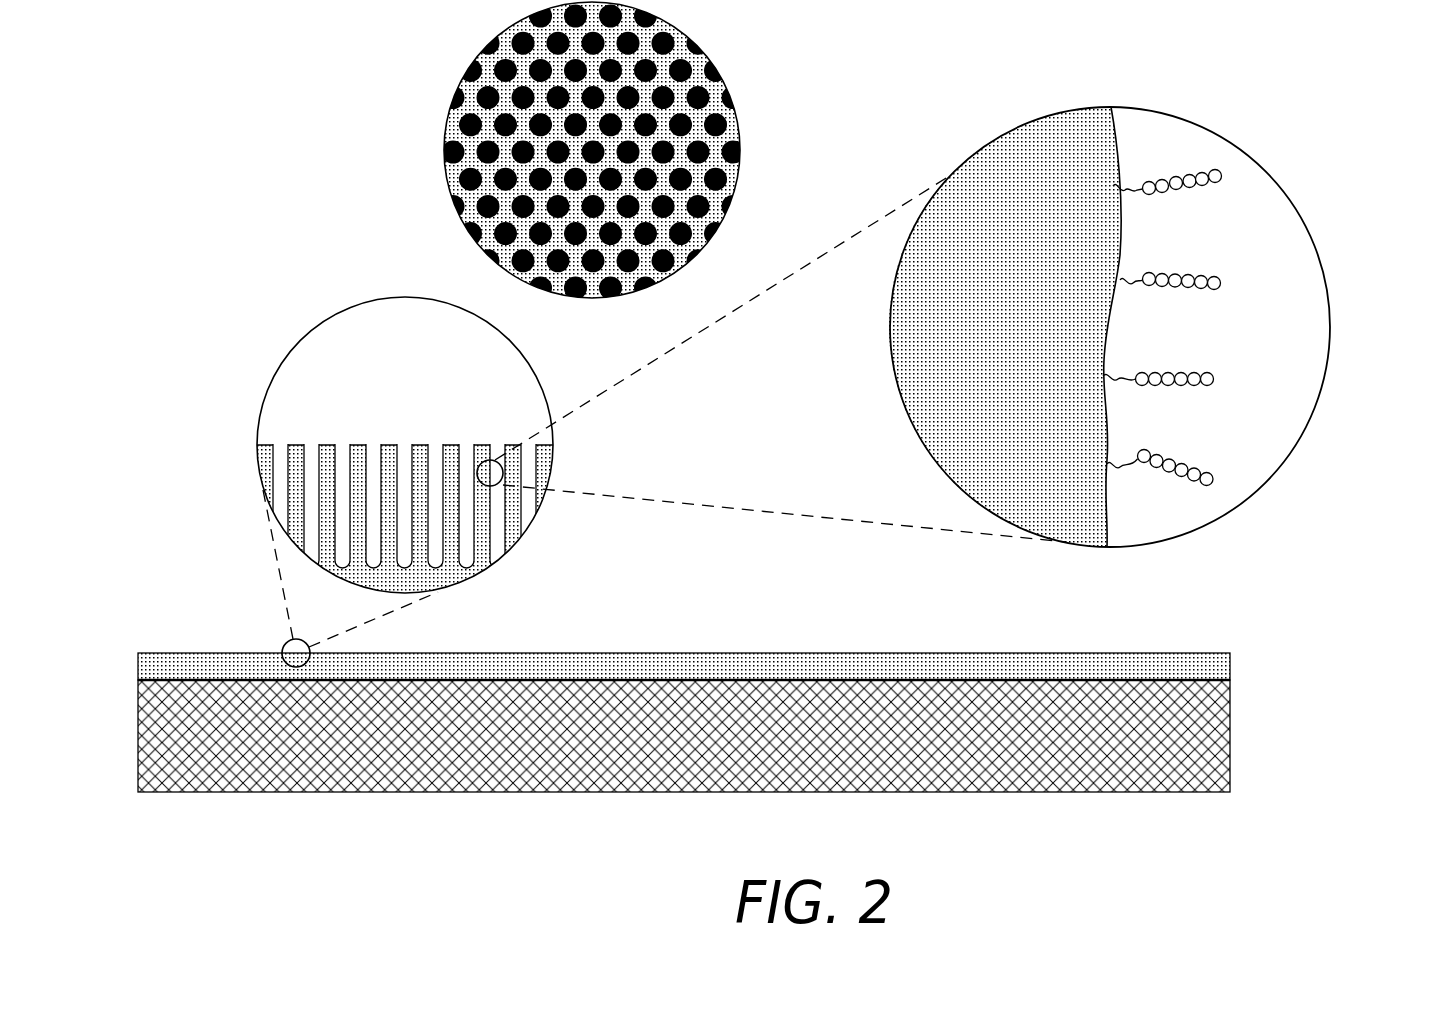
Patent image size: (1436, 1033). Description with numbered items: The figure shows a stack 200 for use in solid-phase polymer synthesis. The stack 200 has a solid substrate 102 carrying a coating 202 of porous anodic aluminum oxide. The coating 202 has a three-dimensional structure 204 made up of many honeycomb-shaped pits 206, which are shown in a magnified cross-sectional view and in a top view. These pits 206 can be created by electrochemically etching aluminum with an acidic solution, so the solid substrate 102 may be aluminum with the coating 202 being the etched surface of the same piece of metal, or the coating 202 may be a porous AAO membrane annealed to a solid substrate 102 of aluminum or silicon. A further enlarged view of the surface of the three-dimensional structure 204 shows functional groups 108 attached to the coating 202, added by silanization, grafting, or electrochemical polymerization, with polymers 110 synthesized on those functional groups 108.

The stack 200 is at (198, 53).
The honeycomb-shaped pits 206 is at (440, 153).
The three-dimensional structure 204 is at (398, 433).
The functional groups 108 is at (1127, 176).
The polymers 110 is at (1219, 266).
The coating 202 is at (755, 666).
The solid substrate 102 is at (769, 736).